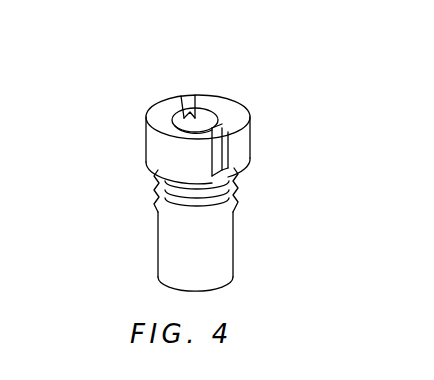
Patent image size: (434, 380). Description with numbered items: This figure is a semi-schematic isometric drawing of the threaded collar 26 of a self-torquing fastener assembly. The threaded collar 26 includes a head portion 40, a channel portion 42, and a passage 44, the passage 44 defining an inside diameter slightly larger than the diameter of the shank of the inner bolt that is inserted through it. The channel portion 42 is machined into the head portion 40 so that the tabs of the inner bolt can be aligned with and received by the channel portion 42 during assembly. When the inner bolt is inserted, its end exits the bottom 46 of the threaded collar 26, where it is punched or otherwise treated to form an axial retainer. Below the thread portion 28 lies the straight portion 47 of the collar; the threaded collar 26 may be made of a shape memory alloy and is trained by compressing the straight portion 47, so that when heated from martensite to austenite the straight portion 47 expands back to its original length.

The threaded collar 26 is at (240, 147).
The thread portion 28 is at (153, 193).
The head portion 40 is at (229, 104).
The channel portion 42 is at (188, 118).
The passage 44 is at (200, 125).
The bottom 46 is at (228, 280).
The straight portion 47 is at (215, 242).